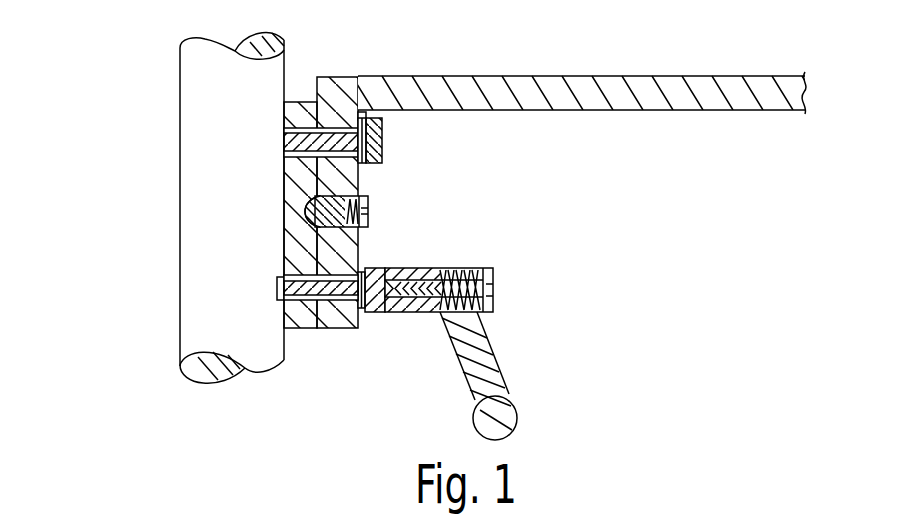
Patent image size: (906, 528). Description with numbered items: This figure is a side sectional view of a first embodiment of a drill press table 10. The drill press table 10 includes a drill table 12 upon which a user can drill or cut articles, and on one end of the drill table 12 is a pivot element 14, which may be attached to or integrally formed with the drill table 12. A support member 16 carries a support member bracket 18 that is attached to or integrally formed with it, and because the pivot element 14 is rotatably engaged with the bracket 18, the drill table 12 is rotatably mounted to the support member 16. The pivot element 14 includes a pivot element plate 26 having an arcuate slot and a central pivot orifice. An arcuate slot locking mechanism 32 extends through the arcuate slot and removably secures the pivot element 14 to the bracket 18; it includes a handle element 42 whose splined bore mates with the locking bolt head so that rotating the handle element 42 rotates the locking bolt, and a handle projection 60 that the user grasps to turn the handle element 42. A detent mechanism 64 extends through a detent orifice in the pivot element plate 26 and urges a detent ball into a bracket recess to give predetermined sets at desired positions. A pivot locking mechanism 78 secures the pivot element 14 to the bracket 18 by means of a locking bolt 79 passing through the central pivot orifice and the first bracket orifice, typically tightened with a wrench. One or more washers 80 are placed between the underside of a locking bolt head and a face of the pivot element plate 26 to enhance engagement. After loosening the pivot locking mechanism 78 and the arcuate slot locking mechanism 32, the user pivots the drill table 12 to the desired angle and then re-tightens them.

The drill press table 10 is at (157, 170).
The drill table 12 is at (712, 76).
The pivot element 14 is at (435, 184).
The support member 16 is at (200, 280).
The support member bracket 18 is at (298, 315).
The pivot element plate 26 is at (348, 313).
The arcuate slot locking mechanism 32 is at (510, 292).
The handle element 42 is at (482, 352).
The handle projection 60 is at (507, 415).
The detent mechanism 64 is at (377, 213).
The pivot locking mechanism 78 is at (397, 136).
The locking bolt 79 is at (333, 123).
The washer 80 is at (361, 116).